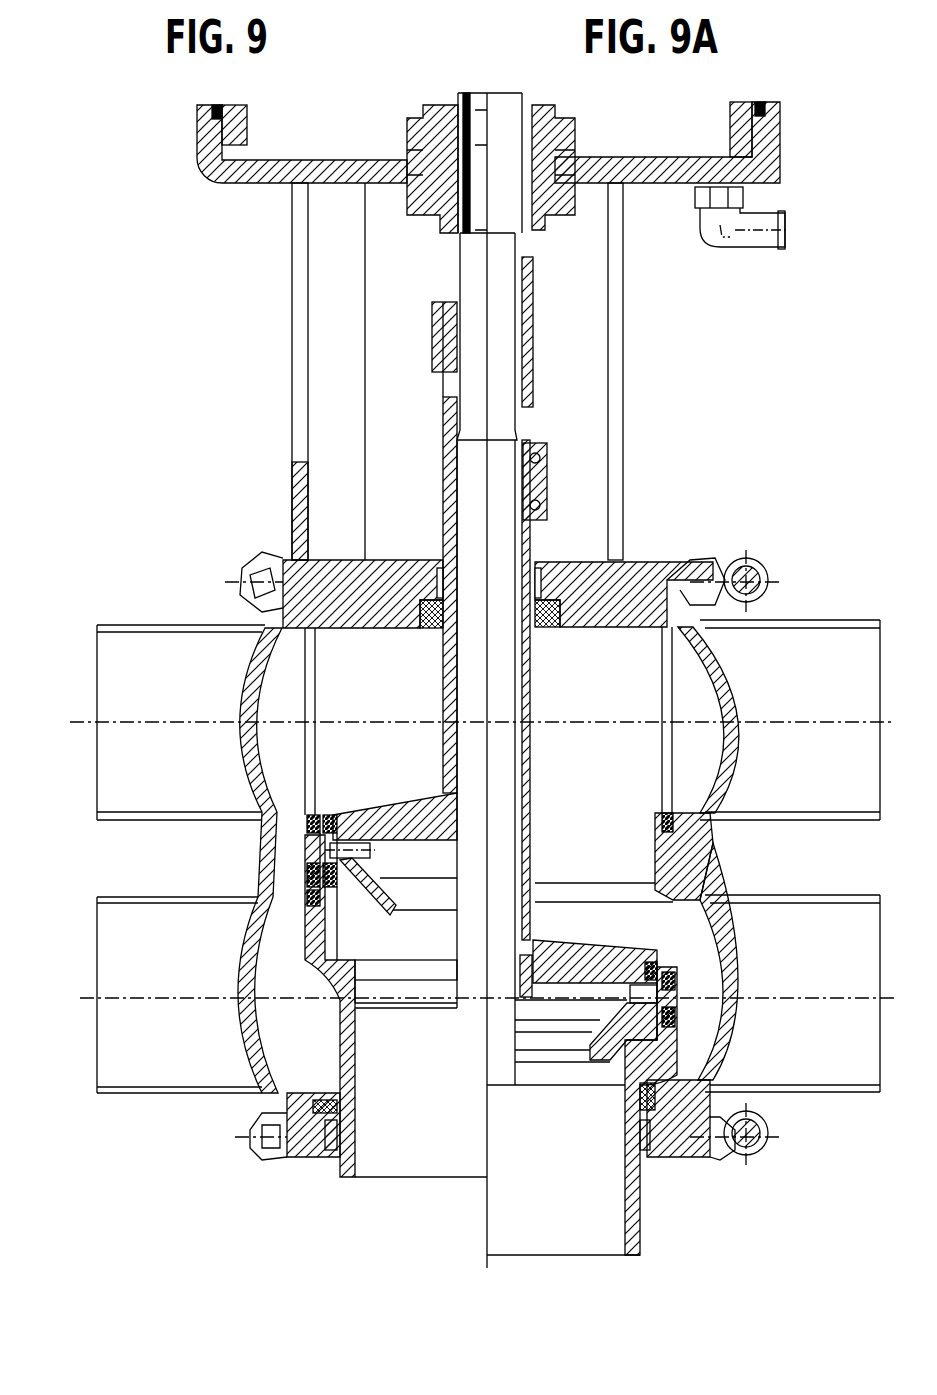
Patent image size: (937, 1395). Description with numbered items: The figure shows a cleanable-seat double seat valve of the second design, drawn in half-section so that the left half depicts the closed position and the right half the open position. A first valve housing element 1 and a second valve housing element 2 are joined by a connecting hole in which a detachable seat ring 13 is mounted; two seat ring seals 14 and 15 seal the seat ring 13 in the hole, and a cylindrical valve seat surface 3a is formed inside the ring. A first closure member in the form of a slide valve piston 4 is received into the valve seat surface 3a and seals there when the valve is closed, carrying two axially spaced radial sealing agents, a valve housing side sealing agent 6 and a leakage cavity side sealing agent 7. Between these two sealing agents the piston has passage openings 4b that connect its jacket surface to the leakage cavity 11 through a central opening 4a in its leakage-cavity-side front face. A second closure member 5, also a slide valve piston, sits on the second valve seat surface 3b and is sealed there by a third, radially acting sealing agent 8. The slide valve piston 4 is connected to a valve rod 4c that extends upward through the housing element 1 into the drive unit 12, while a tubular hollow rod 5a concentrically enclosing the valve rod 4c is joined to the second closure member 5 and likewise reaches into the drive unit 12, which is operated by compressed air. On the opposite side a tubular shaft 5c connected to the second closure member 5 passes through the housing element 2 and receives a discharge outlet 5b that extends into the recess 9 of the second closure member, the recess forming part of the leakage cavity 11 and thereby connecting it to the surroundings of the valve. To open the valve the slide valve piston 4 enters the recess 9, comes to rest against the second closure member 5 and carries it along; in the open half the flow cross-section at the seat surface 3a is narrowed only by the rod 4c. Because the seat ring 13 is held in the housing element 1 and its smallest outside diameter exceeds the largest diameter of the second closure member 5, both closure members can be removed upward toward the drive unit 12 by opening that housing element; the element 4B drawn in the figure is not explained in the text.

In FIG. 9, the first valve housing element 1 is at (176, 655).
In FIG. 9, the second valve housing element 2 is at (185, 1062).
In FIG. 9, the cylindrical valve seat surface 3a is at (338, 812).
In FIG. 9A, the cylindrical valve seat surface 3a is at (655, 845).
In FIG. 9A, the second valve seat surface 3b is at (668, 892).
In FIG. 9, the slide valve piston 4 is at (420, 795).
In FIG. 9A, the slide valve piston 4 is at (585, 965).
In FIG. 9A, the central opening 4a is at (535, 1020).
In FIG. 9A, the passage openings 4b is at (680, 995).
In FIG. 9, the valve rod 4c is at (445, 665).
In FIG. 9, the valve disk flange 4B is at (368, 876).
In FIG. 9, the second closure member 5 is at (310, 948).
In FIG. 9A, the second closure member 5 is at (665, 1005).
In FIG. 9, the tubular hollow rod 5a is at (460, 697).
In FIG. 9, the discharge outlet 5b is at (421, 1130).
In FIG. 9A, the discharge outlet 5b is at (563, 1221).
In FIG. 9, the tubular shaft 5c is at (350, 1137).
In FIG. 9, the valve housing side sealing agent 6 is at (335, 880).
In FIG. 9A, the valve housing side sealing agent 6 is at (660, 1012).
In FIG. 9, the leakage cavity side sealing agent 7 is at (330, 812).
In FIG. 9A, the leakage cavity side sealing agent 7 is at (648, 962).
In FIG. 9, the third sealing agent 8 is at (305, 932).
In FIG. 9A, the third sealing agent 8 is at (672, 975).
In FIG. 9, the recess 9 is at (352, 975).
In FIG. 9, the leakage cavity 11 is at (410, 972).
In FIG. 9A, the leakage cavity 11 is at (558, 1060).
In FIG. 9, the drive unit 12 is at (240, 232).
In FIG. 9, the detachable seat ring 13 is at (302, 868).
In FIG. 9, the seat ring seal 14 is at (312, 812).
In FIG. 9, the seat ring seal 15 is at (307, 895).